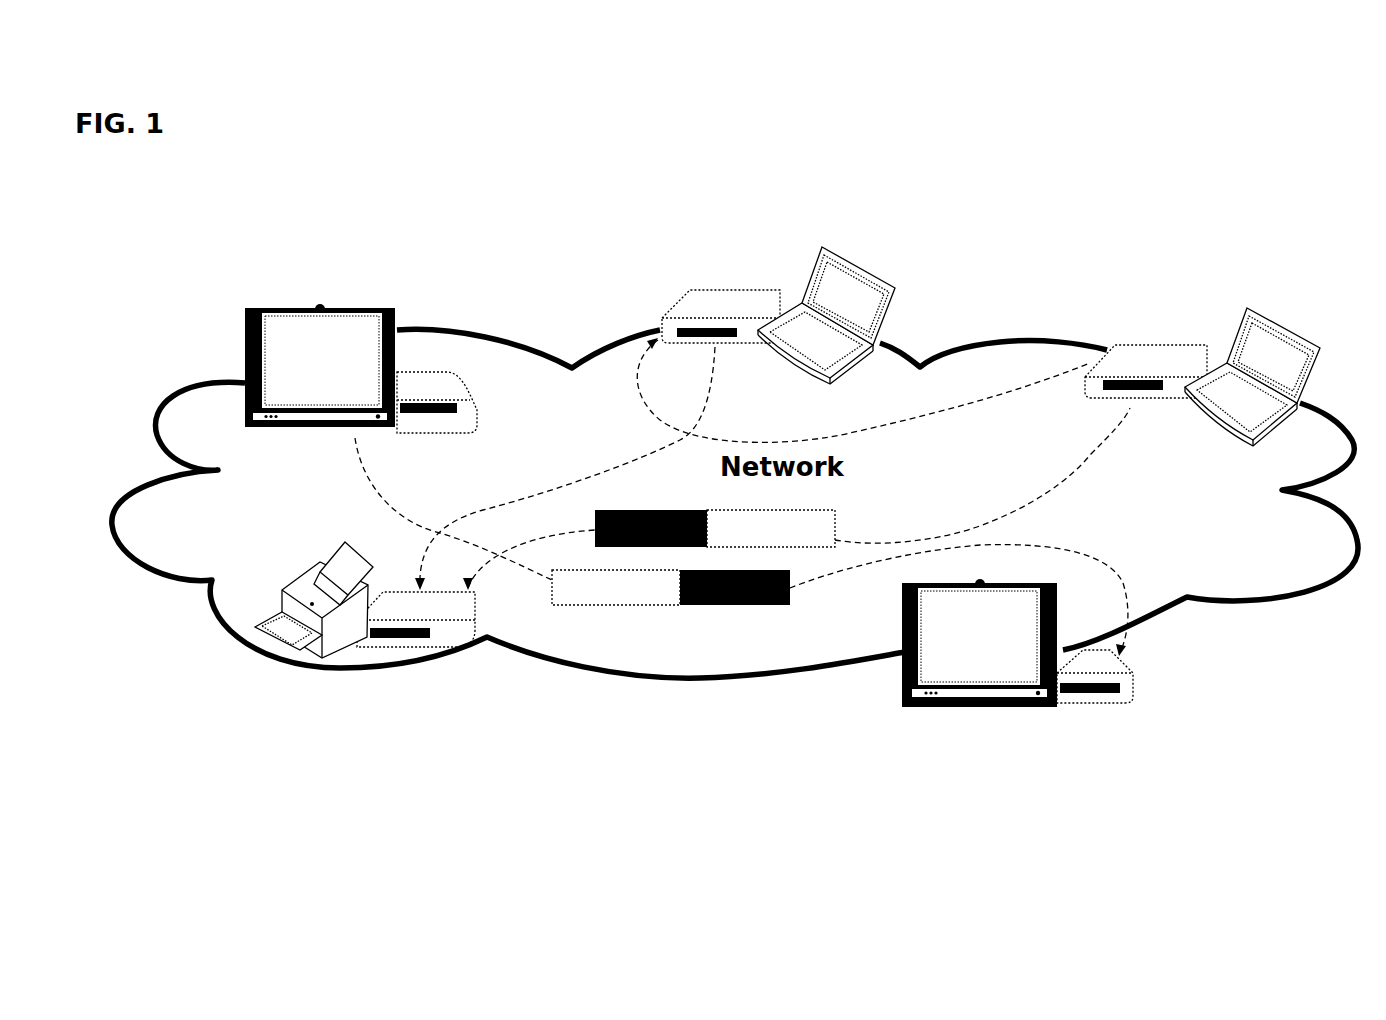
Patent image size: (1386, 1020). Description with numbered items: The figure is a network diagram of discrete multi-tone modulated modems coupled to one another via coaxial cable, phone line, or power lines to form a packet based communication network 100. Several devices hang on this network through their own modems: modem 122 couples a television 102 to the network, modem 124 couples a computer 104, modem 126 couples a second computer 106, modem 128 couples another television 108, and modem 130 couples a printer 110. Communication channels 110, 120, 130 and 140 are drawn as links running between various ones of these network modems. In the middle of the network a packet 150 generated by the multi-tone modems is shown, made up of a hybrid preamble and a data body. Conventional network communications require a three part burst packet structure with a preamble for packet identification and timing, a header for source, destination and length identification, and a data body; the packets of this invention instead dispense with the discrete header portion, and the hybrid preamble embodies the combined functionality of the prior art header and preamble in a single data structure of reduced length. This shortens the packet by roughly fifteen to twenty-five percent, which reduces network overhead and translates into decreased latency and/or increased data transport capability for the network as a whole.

The packet based communication network 100 is at (153, 435).
The television 102 is at (290, 432).
The computer 104 is at (808, 278).
The computer 106 is at (1240, 329).
The television 108 is at (1012, 712).
The printer 110 is at (292, 652).
The communication channel 120 is at (535, 468).
The modem 122 is at (450, 433).
The modem 124 is at (665, 310).
The modem 126 is at (1157, 336).
The modem 128 is at (1120, 705).
The modem 130 is at (385, 552).
The communication channel 140 is at (982, 475).
The packet 150 is at (722, 507).